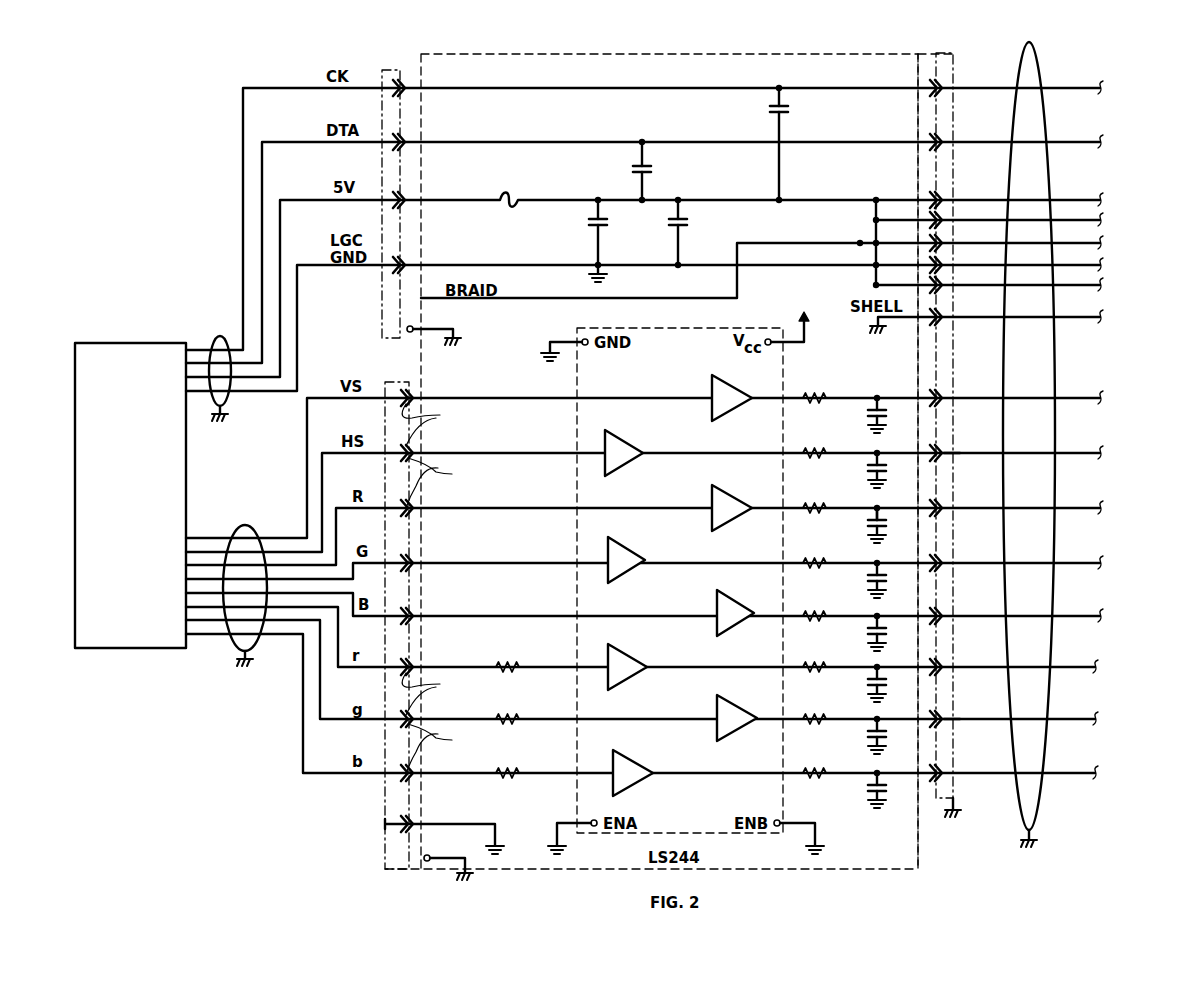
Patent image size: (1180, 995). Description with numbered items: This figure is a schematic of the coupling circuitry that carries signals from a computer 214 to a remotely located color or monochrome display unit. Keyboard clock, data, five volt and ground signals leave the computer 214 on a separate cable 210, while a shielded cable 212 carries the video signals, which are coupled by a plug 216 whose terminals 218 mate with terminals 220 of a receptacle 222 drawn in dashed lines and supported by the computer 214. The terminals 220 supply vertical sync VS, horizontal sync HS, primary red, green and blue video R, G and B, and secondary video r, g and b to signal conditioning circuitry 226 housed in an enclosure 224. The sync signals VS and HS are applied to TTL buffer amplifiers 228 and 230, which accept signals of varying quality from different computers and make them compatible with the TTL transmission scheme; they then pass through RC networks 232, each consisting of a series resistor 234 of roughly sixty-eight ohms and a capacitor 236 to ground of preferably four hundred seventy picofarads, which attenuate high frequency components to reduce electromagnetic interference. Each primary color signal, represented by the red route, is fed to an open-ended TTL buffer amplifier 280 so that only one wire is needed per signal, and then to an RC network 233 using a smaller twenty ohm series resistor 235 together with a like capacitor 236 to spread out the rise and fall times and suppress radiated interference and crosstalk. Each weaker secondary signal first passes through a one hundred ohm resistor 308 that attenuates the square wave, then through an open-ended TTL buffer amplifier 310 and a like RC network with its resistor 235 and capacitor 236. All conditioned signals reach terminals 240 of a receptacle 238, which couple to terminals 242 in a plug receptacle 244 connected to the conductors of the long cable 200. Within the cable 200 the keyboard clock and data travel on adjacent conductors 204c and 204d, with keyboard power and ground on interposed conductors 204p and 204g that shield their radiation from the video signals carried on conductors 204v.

The cable 200 is at (992, 138).
The clock conductor 204c is at (1088, 84).
The data conductor 204d is at (1088, 144).
The power conductor 204p is at (1109, 244).
The ground conductor 204g is at (1104, 263).
The video conductors 204v is at (1102, 398).
The keyboard cable 210 is at (214, 328).
The shielded video cable 212 is at (243, 527).
The computer 214 is at (118, 343).
The plug 216 is at (383, 800).
The plug terminals 218 is at (435, 559).
The receptacle terminals 220 is at (440, 616).
The receptacle 222 is at (424, 870).
The enclosure 224 is at (420, 58).
The signal conditioning circuitry 226 is at (669, 461).
The TTL buffer amplifier 228 is at (712, 386).
The TTL buffer amplifier 230 is at (629, 442).
The RC network 232 is at (916, 435).
The RC network 233 is at (856, 499).
The series resistor 234 is at (816, 394).
The series resistor 235 is at (830, 540).
The capacitor 236 is at (872, 418).
The receptacle 238 is at (916, 98).
The terminals 240 is at (930, 142).
The terminals 242 is at (974, 430).
The plug receptacle 244 is at (954, 70).
The TTL buffer amplifier 280 is at (734, 496).
The resistor 308 is at (508, 765).
The TTL buffer amplifier 310 is at (624, 648).